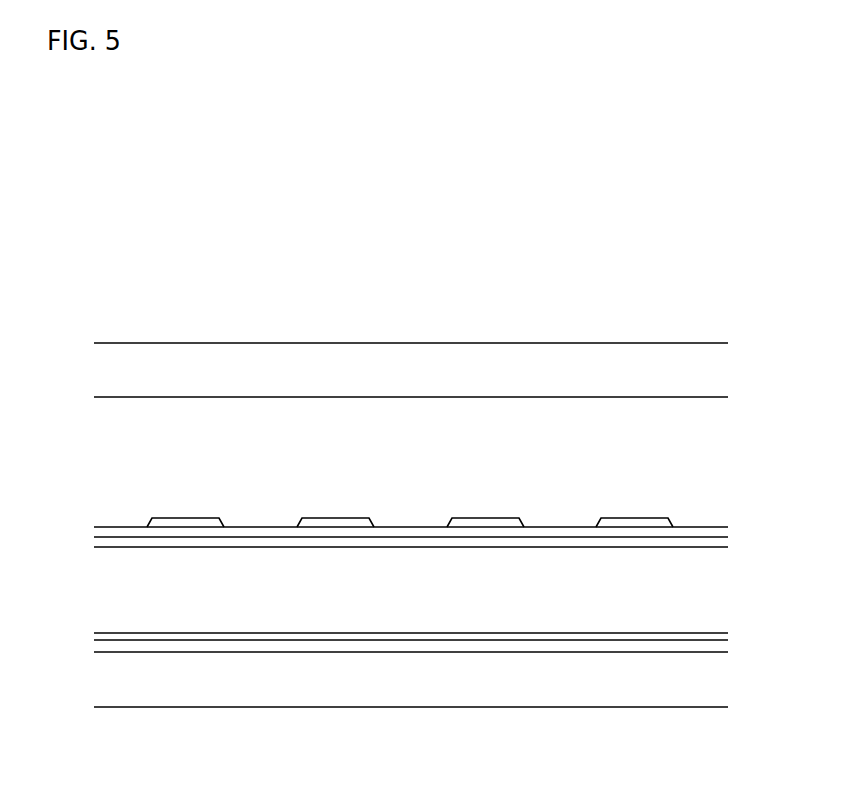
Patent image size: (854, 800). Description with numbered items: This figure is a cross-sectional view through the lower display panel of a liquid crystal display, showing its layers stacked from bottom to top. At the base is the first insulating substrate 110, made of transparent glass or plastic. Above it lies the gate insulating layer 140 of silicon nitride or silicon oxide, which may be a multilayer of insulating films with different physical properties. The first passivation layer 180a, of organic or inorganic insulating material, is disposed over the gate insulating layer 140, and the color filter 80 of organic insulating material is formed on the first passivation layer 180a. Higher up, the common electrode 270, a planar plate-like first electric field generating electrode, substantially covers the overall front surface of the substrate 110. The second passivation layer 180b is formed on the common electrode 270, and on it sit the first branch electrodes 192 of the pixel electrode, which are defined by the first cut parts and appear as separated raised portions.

The common electrode 270 is at (122, 543).
The second passivation layer 180b is at (253, 535).
The first branch electrodes 192 is at (184, 525).
The color filter 80 is at (264, 593).
The first passivation layer 180a is at (365, 635).
The gate insulating layer 140 is at (478, 645).
The first insulating substrate 110 is at (577, 682).